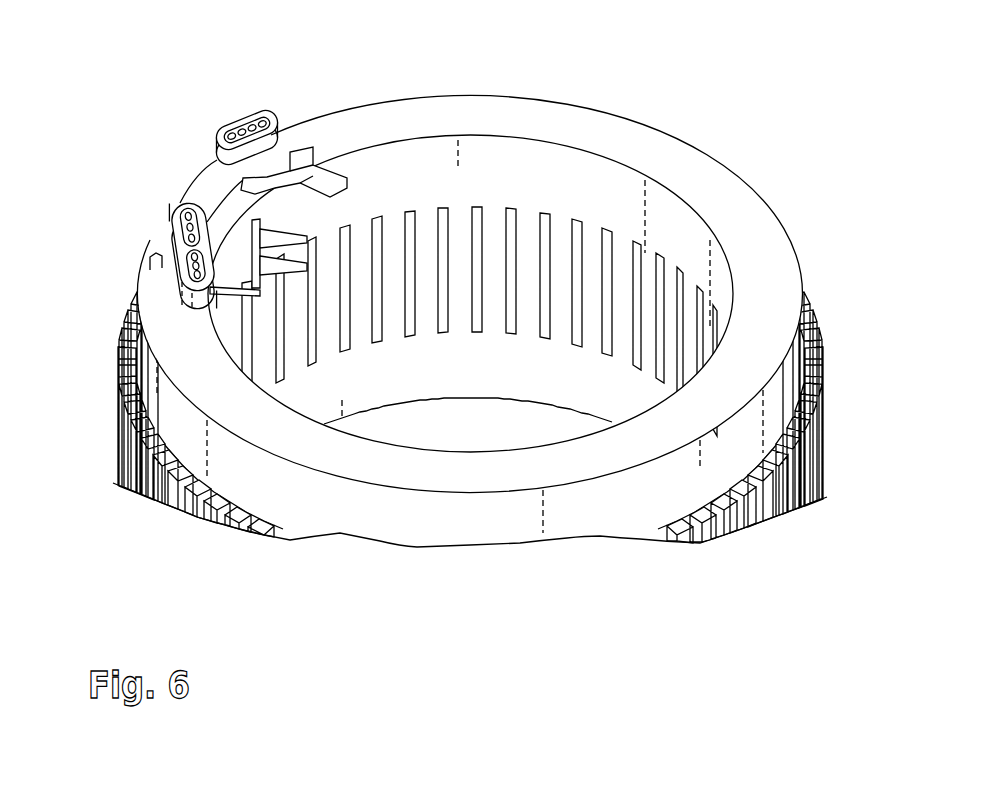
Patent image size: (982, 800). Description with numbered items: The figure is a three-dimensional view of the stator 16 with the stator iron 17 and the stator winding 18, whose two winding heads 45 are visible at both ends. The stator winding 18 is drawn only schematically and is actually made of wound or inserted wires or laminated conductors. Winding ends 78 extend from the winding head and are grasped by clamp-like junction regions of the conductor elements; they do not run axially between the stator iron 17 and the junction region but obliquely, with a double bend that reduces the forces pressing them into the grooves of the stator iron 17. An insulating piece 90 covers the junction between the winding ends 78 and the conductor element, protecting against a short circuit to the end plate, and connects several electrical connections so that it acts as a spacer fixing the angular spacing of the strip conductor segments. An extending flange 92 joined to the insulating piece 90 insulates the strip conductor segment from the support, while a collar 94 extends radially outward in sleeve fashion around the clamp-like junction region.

The stator 16 is at (610, 100).
The stator iron 17 is at (252, 522).
The stator winding 18 is at (348, 520).
The winding heads 45 is at (730, 205).
The winding ends 78 is at (247, 118).
The insulating piece 90 is at (300, 136).
The extending flange 92 is at (305, 140).
The collar 94 is at (213, 152).